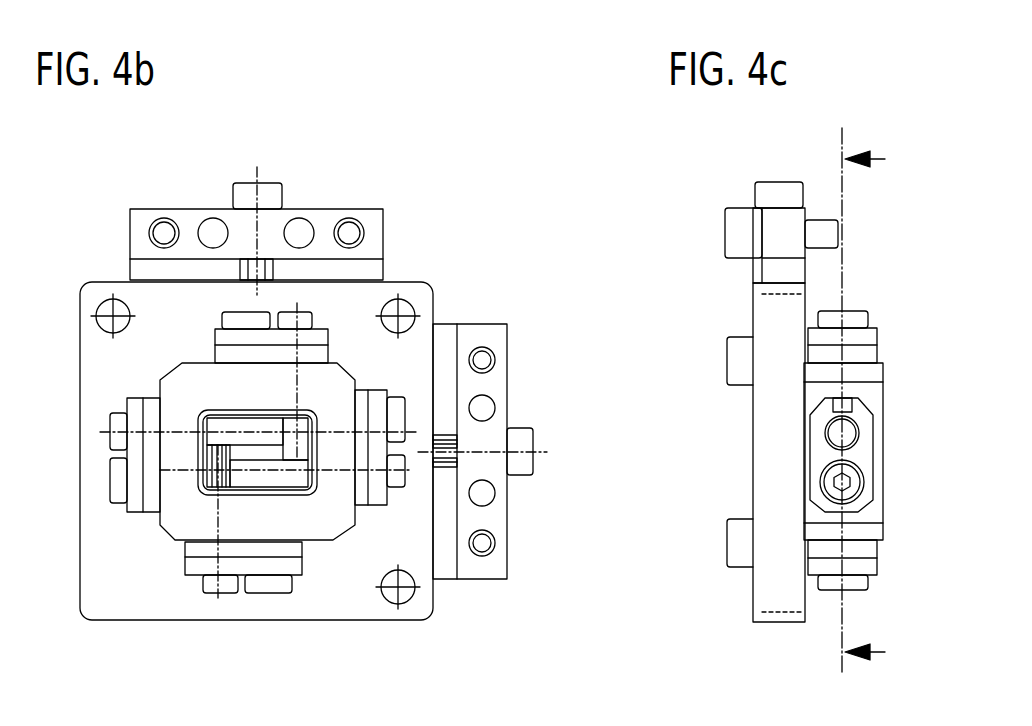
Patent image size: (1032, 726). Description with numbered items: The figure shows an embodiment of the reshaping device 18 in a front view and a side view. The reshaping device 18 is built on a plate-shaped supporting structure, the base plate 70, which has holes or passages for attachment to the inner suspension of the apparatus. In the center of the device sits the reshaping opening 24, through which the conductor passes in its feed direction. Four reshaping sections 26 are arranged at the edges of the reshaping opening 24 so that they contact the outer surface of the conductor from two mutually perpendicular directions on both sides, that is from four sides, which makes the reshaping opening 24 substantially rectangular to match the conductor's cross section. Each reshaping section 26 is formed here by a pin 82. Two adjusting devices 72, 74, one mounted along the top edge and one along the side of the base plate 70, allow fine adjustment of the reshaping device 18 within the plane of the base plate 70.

In FIG. 4b, the reshaping device 18 is at (330, 403).
In FIG. 4c, the reshaping device 18 is at (791, 390).
In FIG. 4b, the reshaping opening 24 is at (247, 450).
In FIG. 4b, the reshaping section 26 is at (229, 405).
In FIG. 4c, the reshaping section 26 is at (843, 450).
In FIG. 4b, the pin 82 is at (233, 425).
In FIG. 4c, the pin 82 is at (843, 450).
In FIG. 4b, the base plate 70 is at (262, 608).
In FIG. 4c, the base plate 70 is at (766, 452).
In FIG. 4b, the adjusting device 72 is at (326, 190).
In FIG. 4c, the adjusting device 72 is at (781, 232).
In FIG. 4b, the adjusting device 74 is at (530, 524).